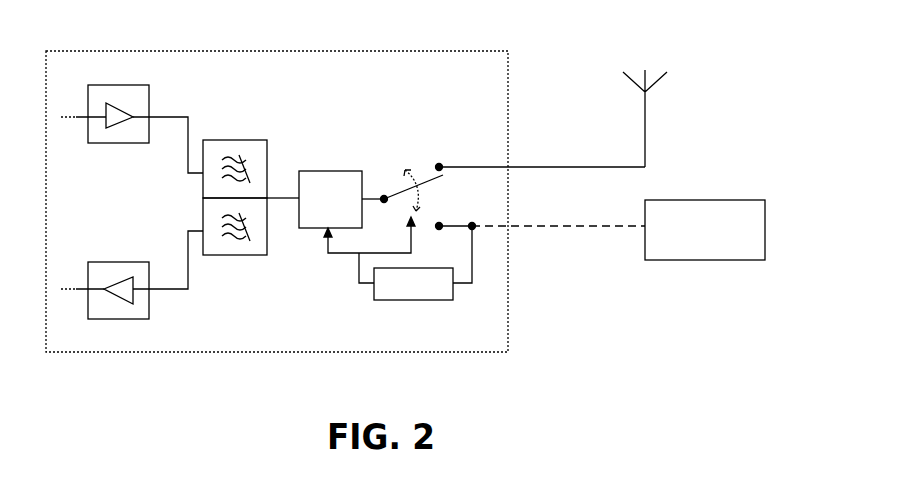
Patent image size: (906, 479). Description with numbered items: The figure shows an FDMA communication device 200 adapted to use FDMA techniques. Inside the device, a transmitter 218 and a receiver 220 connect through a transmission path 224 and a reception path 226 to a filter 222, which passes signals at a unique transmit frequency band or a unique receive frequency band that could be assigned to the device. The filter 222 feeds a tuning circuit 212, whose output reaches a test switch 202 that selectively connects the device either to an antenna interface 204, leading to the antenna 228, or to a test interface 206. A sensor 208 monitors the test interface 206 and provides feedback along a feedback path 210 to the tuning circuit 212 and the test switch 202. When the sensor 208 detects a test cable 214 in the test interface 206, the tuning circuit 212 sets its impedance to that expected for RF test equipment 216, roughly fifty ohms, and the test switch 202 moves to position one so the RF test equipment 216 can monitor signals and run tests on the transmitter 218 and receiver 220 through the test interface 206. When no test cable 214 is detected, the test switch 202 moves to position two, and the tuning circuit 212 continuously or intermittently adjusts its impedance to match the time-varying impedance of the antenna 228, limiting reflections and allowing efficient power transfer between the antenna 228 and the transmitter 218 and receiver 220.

The FDMA communication device 200 is at (277, 48).
The test switch 202 is at (403, 158).
The antenna interface 204 is at (515, 158).
The test interface 206 is at (517, 237).
The sensor 208 is at (413, 300).
The feedback path 210 is at (352, 255).
The tuning circuit 212 is at (331, 171).
The test cable 214 is at (561, 224).
The RF test equipment 216 is at (706, 200).
The transmitter 218 is at (119, 85).
The receiver 220 is at (120, 319).
The filter 222 is at (235, 140).
The transmission path 224 is at (176, 117).
The reception path 226 is at (174, 289).
The antenna 228 is at (653, 65).